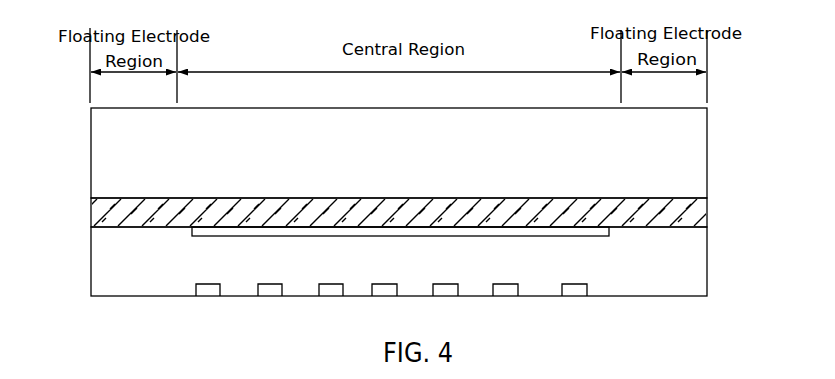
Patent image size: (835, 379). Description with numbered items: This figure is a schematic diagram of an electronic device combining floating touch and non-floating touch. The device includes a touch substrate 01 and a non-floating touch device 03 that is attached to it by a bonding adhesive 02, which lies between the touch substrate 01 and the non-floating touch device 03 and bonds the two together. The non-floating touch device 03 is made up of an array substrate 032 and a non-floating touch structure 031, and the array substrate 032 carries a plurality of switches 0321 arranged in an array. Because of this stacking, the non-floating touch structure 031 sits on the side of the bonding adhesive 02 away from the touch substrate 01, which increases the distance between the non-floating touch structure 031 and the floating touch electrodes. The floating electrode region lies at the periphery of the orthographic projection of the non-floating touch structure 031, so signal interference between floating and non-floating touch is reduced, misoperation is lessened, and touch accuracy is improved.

The touch substrate 01 is at (673, 139).
The bonding adhesive 02 is at (668, 211).
The non-floating touch device 03 is at (418, 262).
The non-floating touch structure 031 is at (609, 232).
The array substrate 032 is at (665, 261).
The switch 0321 is at (205, 290).